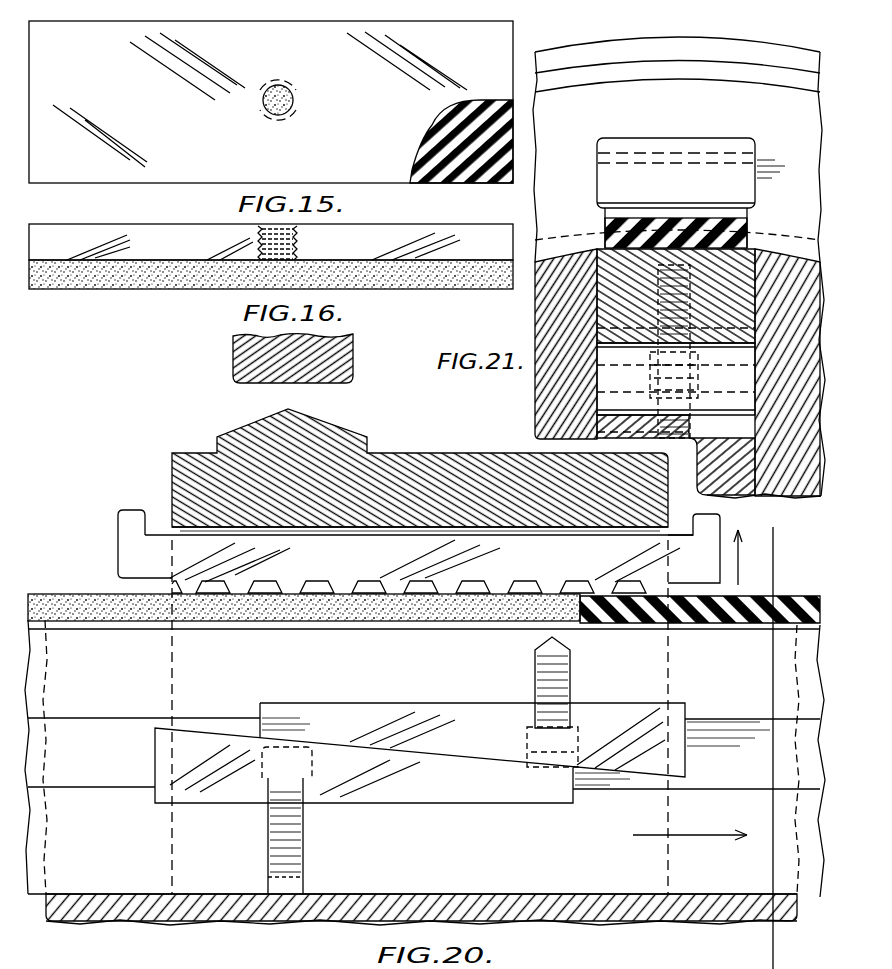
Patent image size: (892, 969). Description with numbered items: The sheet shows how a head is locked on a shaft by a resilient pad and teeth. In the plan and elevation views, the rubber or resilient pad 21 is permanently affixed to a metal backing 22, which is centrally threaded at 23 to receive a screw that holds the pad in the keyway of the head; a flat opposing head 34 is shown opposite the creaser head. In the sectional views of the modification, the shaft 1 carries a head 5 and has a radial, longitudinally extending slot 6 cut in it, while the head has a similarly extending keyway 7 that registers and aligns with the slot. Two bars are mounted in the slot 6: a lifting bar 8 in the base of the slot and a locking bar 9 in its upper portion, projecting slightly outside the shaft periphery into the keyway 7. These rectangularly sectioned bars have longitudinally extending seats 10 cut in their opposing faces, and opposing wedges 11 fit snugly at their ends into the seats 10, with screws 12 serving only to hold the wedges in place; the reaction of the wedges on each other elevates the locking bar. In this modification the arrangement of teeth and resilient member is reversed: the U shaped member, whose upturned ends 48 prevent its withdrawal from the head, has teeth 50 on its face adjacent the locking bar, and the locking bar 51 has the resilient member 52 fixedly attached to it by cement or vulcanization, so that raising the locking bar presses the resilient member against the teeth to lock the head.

In FIG. 21, the shaft 1 is at (552, 393).
In FIG. 20, the shaft 1 is at (625, 905).
In FIG. 21, the head 5 is at (545, 210).
In FIG. 20, the head 5 is at (172, 482).
In FIG. 21, the slot 6 is at (597, 305).
In FIG. 20, the slot 6 is at (510, 893).
In FIG. 21, the keyway 7 is at (598, 195).
In FIG. 20, the keyway 7 is at (380, 525).
In FIG. 21, the lifting bar 8 is at (728, 480).
In FIG. 20, the lifting bar 8 is at (545, 867).
In FIG. 21, the locking bar 9 is at (713, 270).
In FIG. 20, the locking bar 9 is at (715, 674).
In FIG. 20, the seats 10 is at (260, 706).
In FIG. 20, the wedges 11 is at (397, 710).
In FIG. 21, the screws 12 is at (662, 366).
In FIG. 20, the screws 12 is at (305, 830).
In FIG. 15, the resilient pad 21 is at (450, 178).
In FIG. 16, the resilient pad 21 is at (135, 277).
In FIG. 20, the resilient pad 21 is at (775, 566).
In FIG. 15, the metal backing 22 is at (233, 162).
In FIG. 16, the metal backing 22 is at (271, 242).
In FIG. 15, the threaded hole 23 is at (297, 100).
In FIG. 16, the threaded hole 23 is at (297, 242).
In FIG. 16, the flat opposing head 34 is at (233, 370).
In FIG. 21, the upturned ends 48 is at (697, 138).
In FIG. 20, the upturned ends 48 is at (135, 513).
In FIG. 21, the teeth 50 is at (658, 213).
In FIG. 20, the teeth 50 is at (343, 585).
In FIG. 20, the locking bar 51 is at (456, 656).
In FIG. 20, the resilient member 52 is at (58, 598).